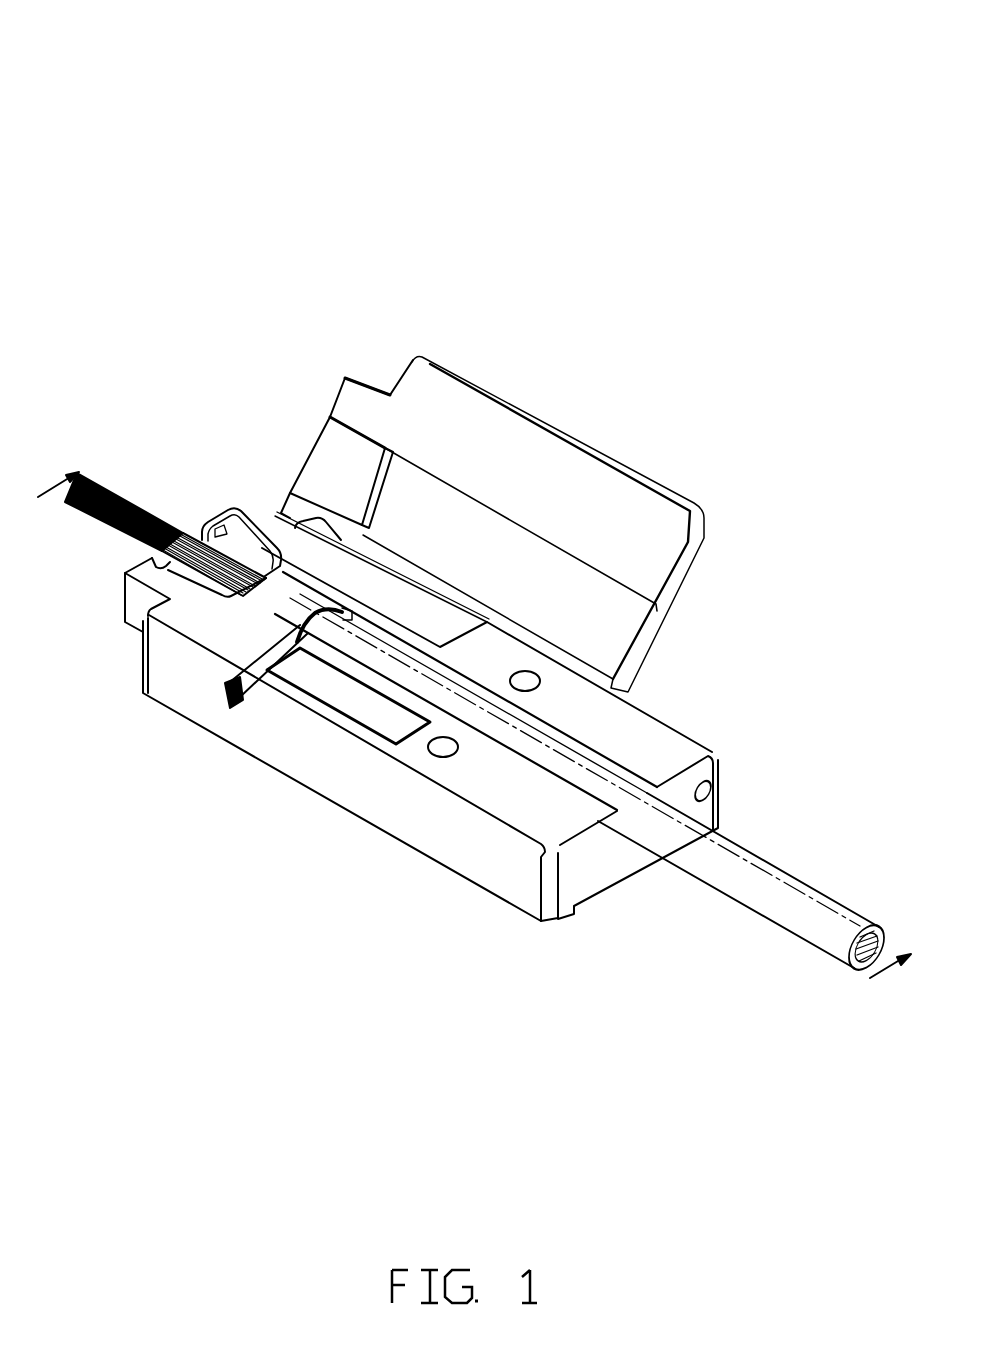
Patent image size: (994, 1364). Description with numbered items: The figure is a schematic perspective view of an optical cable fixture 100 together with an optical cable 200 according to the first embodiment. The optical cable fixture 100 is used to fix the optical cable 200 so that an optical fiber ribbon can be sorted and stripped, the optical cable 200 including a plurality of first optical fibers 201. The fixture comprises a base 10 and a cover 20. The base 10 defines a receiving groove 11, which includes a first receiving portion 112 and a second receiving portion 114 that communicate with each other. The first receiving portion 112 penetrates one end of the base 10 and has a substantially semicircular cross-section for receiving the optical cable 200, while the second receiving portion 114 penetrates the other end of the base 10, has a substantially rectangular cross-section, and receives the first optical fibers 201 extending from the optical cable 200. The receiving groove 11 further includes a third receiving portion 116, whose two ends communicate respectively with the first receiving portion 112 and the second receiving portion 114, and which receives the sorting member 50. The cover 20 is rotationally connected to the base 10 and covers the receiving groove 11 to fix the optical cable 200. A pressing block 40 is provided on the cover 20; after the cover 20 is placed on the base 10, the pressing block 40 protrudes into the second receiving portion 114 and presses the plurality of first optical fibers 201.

The optical cable fixture 100 is at (484, 37).
The base 10 is at (410, 827).
The receiving groove 11 is at (130, 778).
The first receiving portion 112 is at (388, 680).
The second receiving portion 114 is at (210, 583).
The third receiving portion 116 is at (273, 623).
The cover 20 is at (610, 462).
The pressing block 40 is at (326, 462).
The sorting member 50 is at (270, 580).
The optical cable 200 is at (765, 898).
The first optical fibers 201 is at (128, 538).